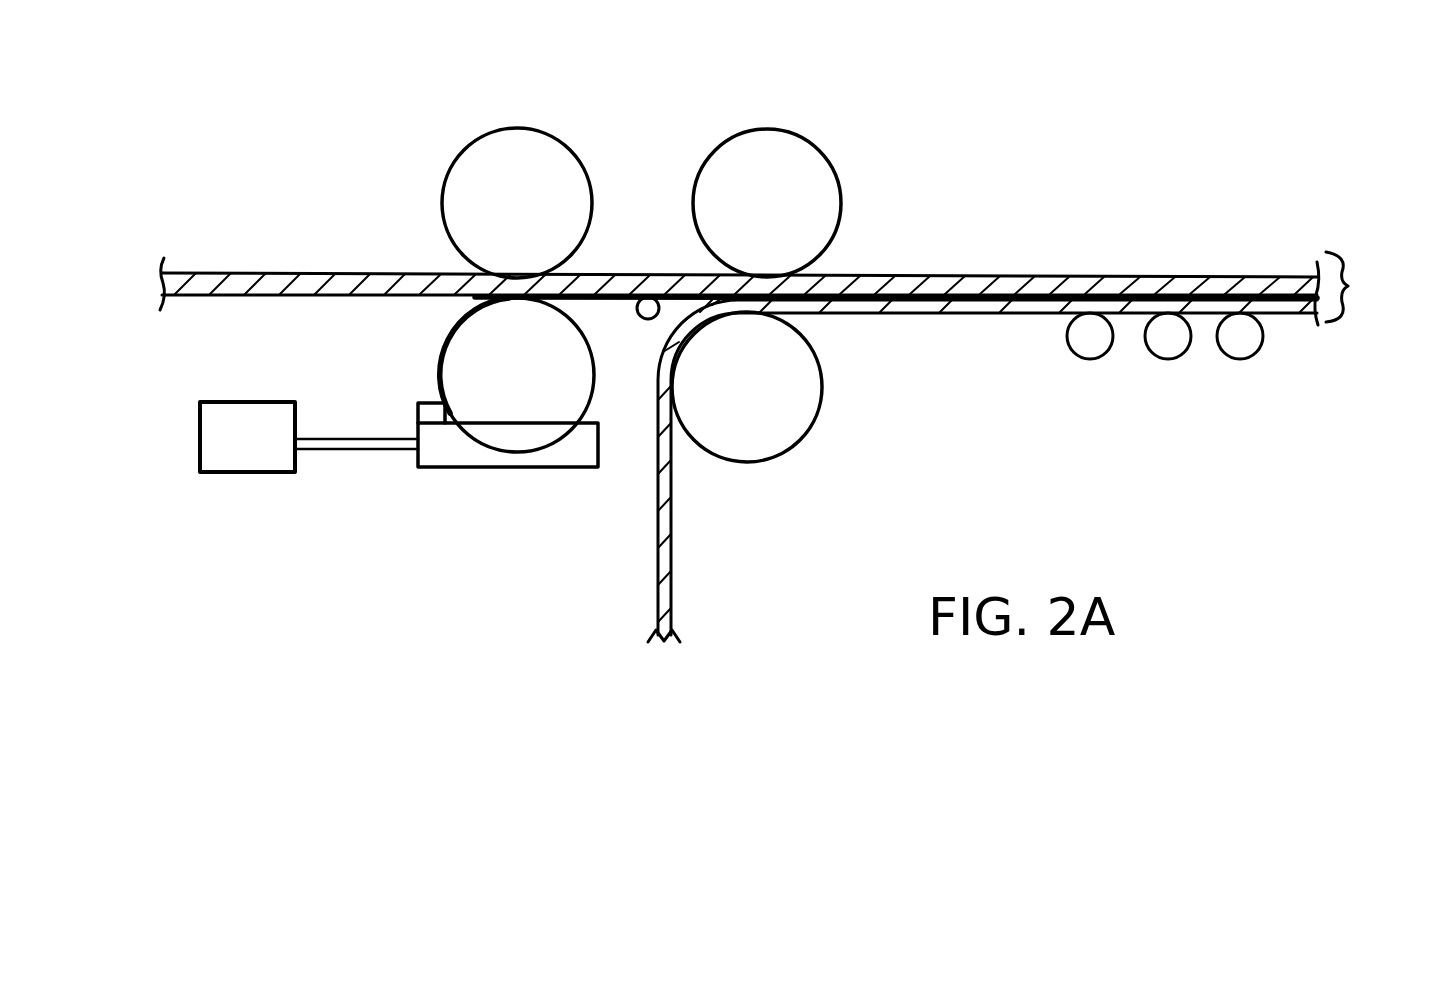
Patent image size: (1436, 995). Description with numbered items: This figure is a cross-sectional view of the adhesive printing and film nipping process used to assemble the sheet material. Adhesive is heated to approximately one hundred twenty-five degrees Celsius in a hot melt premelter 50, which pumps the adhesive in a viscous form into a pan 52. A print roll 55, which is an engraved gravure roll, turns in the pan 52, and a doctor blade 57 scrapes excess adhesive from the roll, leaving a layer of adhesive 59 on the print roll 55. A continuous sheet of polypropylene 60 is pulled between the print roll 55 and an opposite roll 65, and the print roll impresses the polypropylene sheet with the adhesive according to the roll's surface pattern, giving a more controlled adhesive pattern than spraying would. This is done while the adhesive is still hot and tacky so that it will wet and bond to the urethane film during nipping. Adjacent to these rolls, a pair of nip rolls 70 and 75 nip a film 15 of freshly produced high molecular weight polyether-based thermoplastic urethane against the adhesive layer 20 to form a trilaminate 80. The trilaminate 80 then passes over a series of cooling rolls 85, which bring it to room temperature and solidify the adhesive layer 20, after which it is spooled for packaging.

The urethane film 15 is at (672, 558).
The adhesive layer 20 is at (658, 302).
The hot melt premelter 50 is at (246, 473).
The pan 52 is at (460, 467).
The print roll 55 is at (594, 385).
The doctor blade 57 is at (428, 402).
The layer of adhesive 59 is at (445, 337).
The continuous sheet of polypropylene 60 is at (222, 272).
The opposite roll 65 is at (520, 128).
The nip roll 70 is at (820, 405).
The nip roll 75 is at (778, 130).
The trilaminate 80 is at (1350, 285).
The cooling rolls 85 is at (1095, 359).